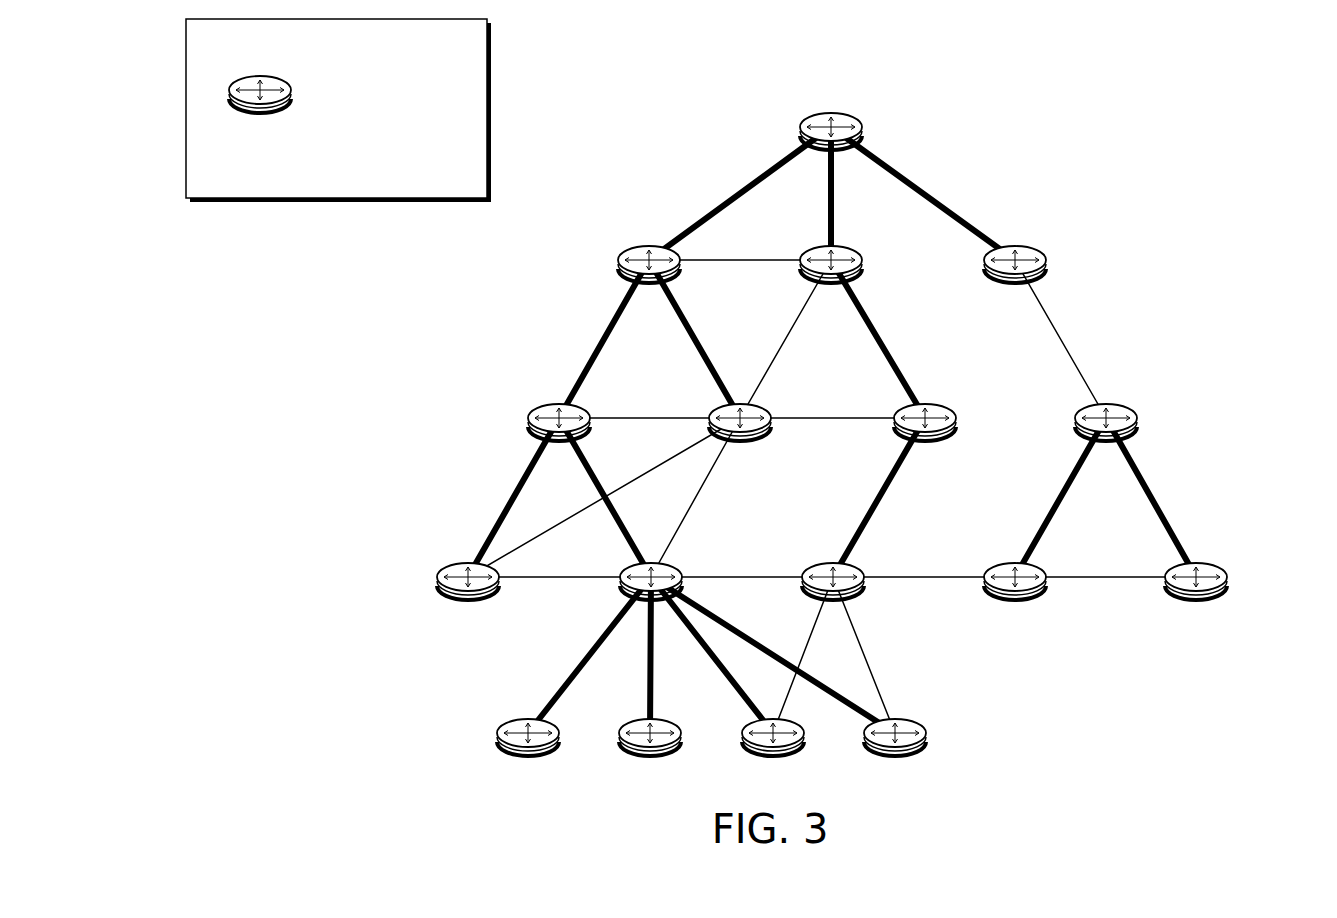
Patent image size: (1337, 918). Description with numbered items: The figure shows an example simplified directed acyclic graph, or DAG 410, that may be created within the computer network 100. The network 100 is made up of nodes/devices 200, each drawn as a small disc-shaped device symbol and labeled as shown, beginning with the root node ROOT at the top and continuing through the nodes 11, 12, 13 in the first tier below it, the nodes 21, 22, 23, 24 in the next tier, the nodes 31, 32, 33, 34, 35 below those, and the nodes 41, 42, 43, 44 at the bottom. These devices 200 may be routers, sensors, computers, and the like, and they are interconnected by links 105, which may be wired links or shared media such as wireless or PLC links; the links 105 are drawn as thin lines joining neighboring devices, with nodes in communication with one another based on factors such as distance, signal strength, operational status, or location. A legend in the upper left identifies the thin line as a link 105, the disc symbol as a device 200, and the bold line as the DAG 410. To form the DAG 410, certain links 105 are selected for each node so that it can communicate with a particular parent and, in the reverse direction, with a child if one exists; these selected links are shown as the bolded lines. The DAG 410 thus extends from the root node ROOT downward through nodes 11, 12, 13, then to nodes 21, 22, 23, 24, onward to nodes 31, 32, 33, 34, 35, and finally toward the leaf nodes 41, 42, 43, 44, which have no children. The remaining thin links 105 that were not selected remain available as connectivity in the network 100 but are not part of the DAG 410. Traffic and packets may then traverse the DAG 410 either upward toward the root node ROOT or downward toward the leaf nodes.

The computer network 100 is at (1252, 78).
The links 105 is at (219, 48).
The nodes/devices 200 is at (337, 94).
The DAG 410 is at (219, 157).
The root node ROOT is at (831, 111).
The node 11 is at (649, 284).
The node 12 is at (831, 284).
The node 13 is at (1015, 284).
The node 21 is at (559, 442).
The node 22 is at (740, 442).
The node 23 is at (925, 442).
The node 24 is at (1106, 442).
The node 31 is at (468, 600).
The node 32 is at (651, 600).
The node 33 is at (833, 600).
The node 34 is at (1015, 600).
The node 35 is at (1196, 600).
The node 41 is at (528, 757).
The node 42 is at (650, 757).
The node 43 is at (773, 757).
The node 44 is at (895, 757).